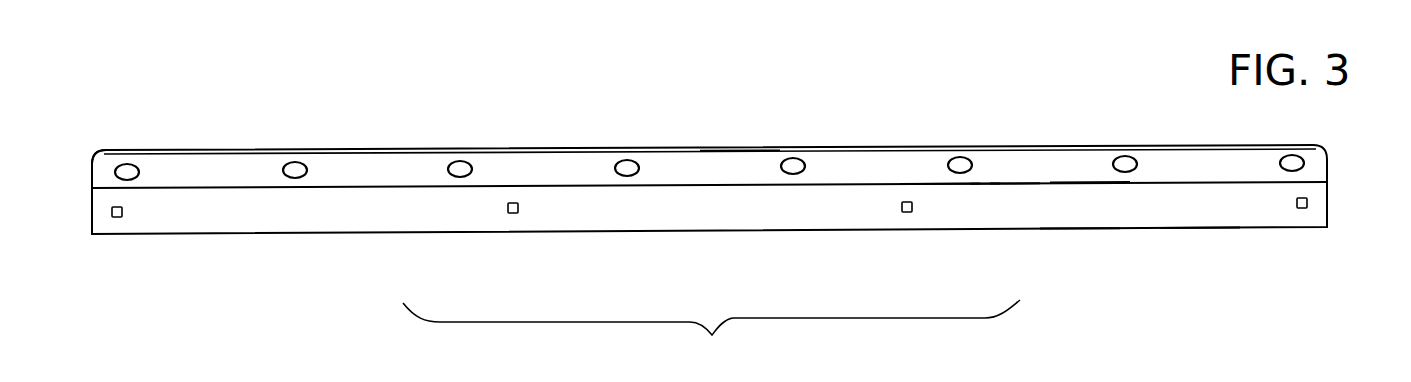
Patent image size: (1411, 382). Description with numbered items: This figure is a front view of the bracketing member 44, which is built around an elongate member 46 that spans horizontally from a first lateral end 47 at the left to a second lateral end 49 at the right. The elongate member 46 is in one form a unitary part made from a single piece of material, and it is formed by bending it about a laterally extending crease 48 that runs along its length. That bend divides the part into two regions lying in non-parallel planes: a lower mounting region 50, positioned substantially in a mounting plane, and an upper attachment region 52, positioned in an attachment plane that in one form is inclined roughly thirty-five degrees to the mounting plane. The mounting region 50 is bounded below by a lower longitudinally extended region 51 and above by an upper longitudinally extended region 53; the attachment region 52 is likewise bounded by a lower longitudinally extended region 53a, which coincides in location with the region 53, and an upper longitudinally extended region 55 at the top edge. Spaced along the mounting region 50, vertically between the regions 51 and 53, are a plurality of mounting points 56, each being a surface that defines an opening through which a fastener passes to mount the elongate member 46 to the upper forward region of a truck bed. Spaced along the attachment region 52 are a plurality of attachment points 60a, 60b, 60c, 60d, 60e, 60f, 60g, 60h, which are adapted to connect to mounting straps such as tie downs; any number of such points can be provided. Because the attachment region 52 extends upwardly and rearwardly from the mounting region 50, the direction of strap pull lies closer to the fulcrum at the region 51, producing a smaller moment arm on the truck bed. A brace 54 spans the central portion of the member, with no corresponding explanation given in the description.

The bracketing member 44 is at (905, 120).
The elongate member 46 is at (920, 162).
The first lateral end 47 is at (105, 168).
The laterally extending crease 48 is at (1088, 183).
The second lateral end 49 is at (1318, 193).
The mounting region 50 is at (1060, 213).
The lower longitudinally extended region 51 is at (1192, 228).
The attachment region 52 is at (740, 163).
The upper longitudinally extended region 53 is at (1010, 183).
The lower longitudinally extended region 53a is at (985, 183).
The central section 54 is at (711, 332).
The upper longitudinally extended region 55 is at (723, 147).
The mounting points 56 is at (117, 218).
The attachment point 60a is at (127, 164).
The attachment point 60b is at (295, 162).
The attachment point 60c is at (460, 161).
The attachment point 60d is at (628, 160).
The attachment point 60e is at (793, 158).
The attachment point 60f is at (960, 157).
The attachment point 60g is at (1125, 156).
The attachment point 60h is at (1292, 155).